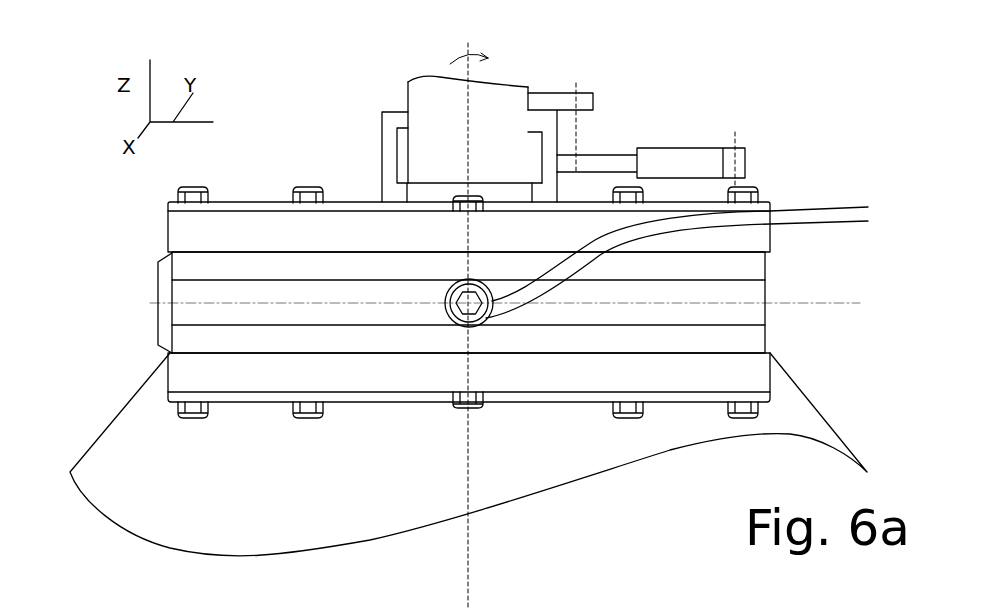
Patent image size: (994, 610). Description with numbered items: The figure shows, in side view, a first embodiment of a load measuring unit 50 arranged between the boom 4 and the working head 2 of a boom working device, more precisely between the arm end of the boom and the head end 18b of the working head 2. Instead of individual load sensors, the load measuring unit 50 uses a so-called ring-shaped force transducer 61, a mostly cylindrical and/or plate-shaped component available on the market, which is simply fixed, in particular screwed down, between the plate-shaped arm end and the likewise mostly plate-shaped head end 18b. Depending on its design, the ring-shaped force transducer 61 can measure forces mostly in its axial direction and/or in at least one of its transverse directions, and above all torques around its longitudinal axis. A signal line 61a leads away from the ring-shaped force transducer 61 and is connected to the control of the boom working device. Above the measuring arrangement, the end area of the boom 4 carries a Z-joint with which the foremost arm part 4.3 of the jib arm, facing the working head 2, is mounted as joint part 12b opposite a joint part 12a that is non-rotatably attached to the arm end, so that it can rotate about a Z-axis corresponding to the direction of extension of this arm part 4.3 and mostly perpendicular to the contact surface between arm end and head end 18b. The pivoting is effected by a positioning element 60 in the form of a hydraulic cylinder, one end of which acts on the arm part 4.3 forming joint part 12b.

The working head 2 is at (153, 450).
The boom 4 is at (402, 82).
The foremost arm part 4.3 is at (507, 138).
The joint part 12a is at (382, 130).
The joint part 12b is at (587, 103).
The head end 18b is at (745, 373).
The load measuring unit 50 is at (773, 323).
The positioning element 60 is at (665, 163).
The ring-shaped force transducer 61 is at (158, 289).
The signal line 61a is at (830, 212).